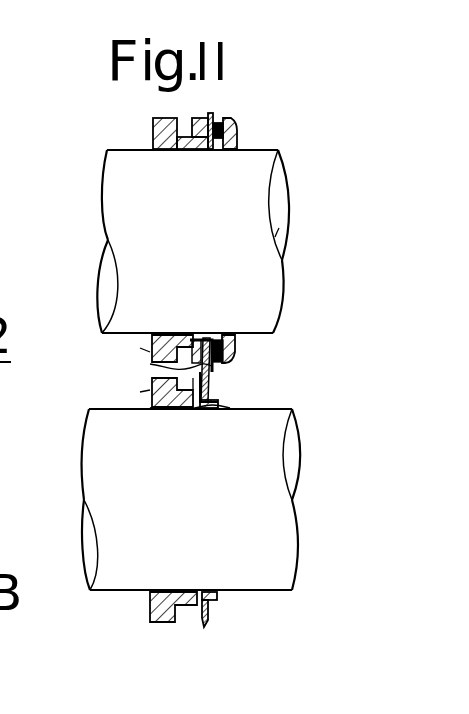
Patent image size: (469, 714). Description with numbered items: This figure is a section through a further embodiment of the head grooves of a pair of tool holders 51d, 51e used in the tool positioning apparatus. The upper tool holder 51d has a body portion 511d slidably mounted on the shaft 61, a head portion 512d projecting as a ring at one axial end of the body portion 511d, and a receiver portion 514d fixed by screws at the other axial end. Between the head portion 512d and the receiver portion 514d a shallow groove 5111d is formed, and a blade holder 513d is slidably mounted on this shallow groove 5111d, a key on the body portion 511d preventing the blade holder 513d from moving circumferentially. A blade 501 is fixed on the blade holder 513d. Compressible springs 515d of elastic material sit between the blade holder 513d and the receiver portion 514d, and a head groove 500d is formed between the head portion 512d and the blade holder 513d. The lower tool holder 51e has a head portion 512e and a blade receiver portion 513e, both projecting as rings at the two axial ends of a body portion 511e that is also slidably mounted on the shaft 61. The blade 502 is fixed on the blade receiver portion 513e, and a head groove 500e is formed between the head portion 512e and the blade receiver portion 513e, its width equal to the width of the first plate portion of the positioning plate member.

The head groove 500d is at (203, 333).
The head groove 500e is at (193, 411).
The shaft 61 is at (275, 237).
The body portion 511d is at (177, 333).
The shallow groove 5111d is at (192, 333).
The head portion 512d is at (163, 333).
The blade holder 513d is at (212, 363).
The receiver portion 514d is at (233, 335).
The compressible springs 515d is at (236, 366).
The blade 501 is at (214, 375).
The blade 502 is at (216, 402).
The head portion 512e is at (167, 410).
The blade receiver portion 513e is at (215, 411).
The body portion 511e is at (209, 412).
The tool holder 51d is at (138, 351).
The tool holder 51e is at (138, 393).